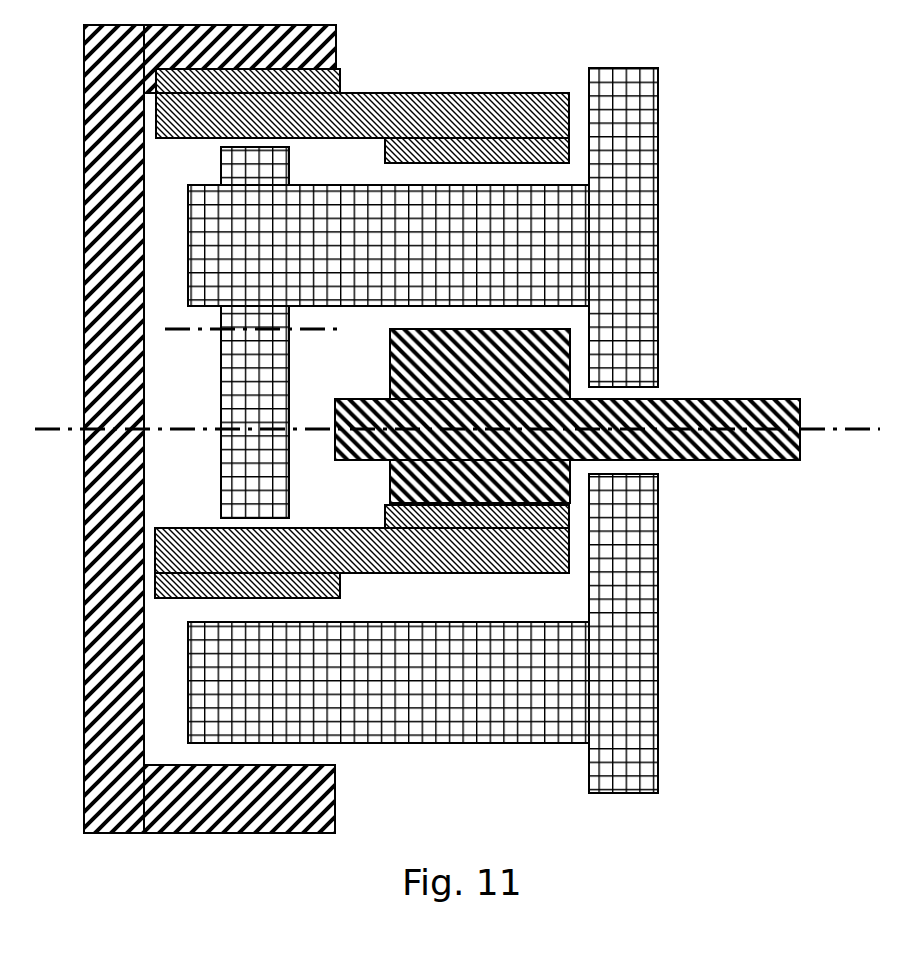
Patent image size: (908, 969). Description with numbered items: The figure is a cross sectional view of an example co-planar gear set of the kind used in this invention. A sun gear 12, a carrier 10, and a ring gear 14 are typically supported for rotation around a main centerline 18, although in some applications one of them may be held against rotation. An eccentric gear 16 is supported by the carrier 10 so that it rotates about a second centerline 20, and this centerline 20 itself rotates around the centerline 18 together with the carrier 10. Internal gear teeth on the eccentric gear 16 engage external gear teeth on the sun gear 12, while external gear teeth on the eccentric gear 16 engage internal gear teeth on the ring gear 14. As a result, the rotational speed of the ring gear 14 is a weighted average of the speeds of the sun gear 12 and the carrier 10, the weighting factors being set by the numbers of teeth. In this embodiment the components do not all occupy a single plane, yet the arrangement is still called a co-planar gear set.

The carrier 10 is at (404, 252).
The sun gear 12 is at (474, 389).
The ring gear 14 is at (231, 806).
The eccentric gear 16 is at (294, 116).
The centerline 18 is at (842, 423).
The centerline 20 is at (176, 331).